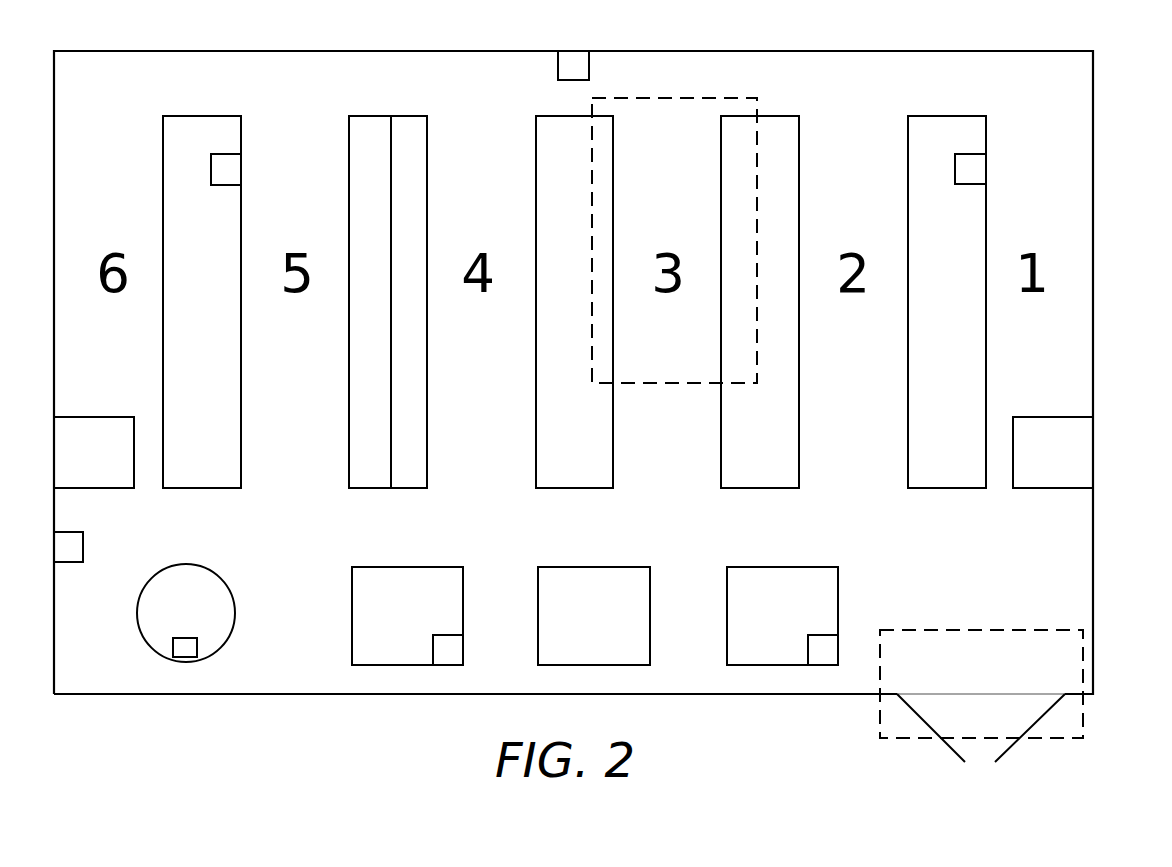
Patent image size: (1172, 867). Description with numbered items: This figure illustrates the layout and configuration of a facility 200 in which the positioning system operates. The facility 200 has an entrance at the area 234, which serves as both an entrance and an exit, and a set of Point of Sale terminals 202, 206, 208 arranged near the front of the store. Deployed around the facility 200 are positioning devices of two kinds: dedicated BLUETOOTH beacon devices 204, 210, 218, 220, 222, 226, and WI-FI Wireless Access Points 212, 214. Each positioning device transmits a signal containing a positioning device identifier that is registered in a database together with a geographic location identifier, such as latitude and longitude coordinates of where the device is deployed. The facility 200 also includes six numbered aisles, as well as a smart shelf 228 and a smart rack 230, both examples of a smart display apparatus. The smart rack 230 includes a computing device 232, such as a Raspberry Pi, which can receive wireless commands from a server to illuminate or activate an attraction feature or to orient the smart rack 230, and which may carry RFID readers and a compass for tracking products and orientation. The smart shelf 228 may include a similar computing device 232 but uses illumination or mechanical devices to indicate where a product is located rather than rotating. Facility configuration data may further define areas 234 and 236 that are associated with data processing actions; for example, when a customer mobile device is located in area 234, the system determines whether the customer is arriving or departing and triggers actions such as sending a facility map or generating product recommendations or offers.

The facility 200 is at (718, 51).
The Point of Sale (POS) terminal 202 is at (445, 567).
The BLUETOOTH beacon device 204 is at (455, 635).
The Point of Sale (POS) terminal 206 is at (594, 567).
The Point of Sale (POS) terminal 208 is at (752, 567).
The BLUETOOTH beacon device 210 is at (830, 635).
The WI-FI Wireless Access Point (WAP) 212 is at (1067, 488).
The WI-FI Wireless Access Point (WAP) 214 is at (65, 417).
The BLUETOOTH beacon device 218 is at (84, 533).
The BLUETOOTH beacon device 220 is at (238, 154).
The BLUETOOTH beacon device 222 is at (587, 51).
The BLUETOOTH beacon device 226 is at (977, 153).
The smart shelf 228 is at (407, 488).
The smart rack 230 is at (235, 610).
The computing device 232 is at (173, 645).
The area (entrance) 234 is at (1082, 657).
The defined area 236 is at (718, 98).